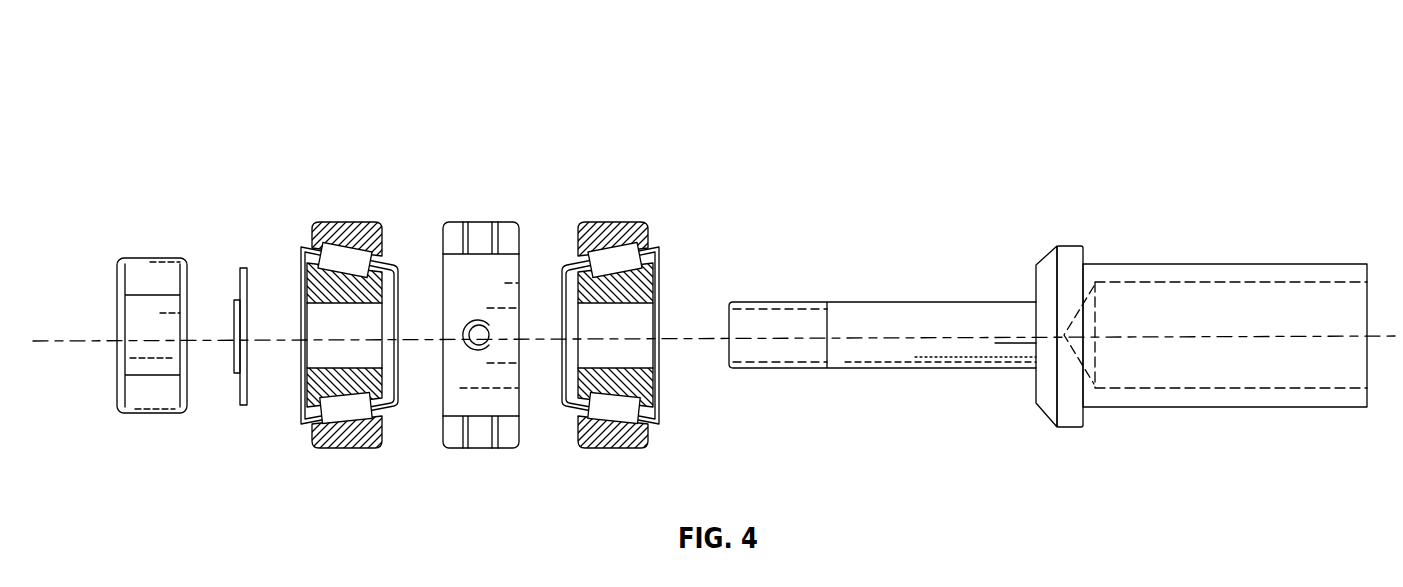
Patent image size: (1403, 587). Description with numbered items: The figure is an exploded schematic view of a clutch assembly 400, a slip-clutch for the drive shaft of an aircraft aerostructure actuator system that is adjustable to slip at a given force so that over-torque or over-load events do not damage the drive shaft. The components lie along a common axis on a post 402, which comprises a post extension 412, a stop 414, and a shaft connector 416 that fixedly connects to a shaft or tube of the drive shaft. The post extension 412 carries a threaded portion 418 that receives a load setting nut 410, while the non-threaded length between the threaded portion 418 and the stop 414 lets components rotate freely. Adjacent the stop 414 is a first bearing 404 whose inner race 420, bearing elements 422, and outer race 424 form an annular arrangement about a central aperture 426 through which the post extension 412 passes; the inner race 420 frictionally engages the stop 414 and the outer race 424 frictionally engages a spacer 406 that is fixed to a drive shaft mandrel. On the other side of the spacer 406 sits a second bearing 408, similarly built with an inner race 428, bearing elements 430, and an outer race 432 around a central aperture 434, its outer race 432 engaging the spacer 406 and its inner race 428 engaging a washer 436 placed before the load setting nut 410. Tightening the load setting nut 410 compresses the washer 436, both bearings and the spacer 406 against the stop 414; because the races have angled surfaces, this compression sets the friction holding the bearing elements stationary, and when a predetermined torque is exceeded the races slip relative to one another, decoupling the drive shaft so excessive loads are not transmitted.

The clutch assembly 400 is at (213, 84).
The post 402 is at (1048, 338).
The first bearing 404 is at (465, 318).
The spacer 406 is at (489, 197).
The second bearing 408 is at (494, 303).
The load setting nut 410 is at (154, 226).
The post extension 412 is at (880, 355).
The stop 414 is at (1047, 420).
The shaft connector 416 is at (1250, 407).
The threaded portion 418 is at (780, 358).
The inner race 420 is at (621, 372).
The bearing elements 422 is at (628, 258).
The outer race 424 is at (601, 235).
The central aperture 426 is at (602, 341).
The inner race 428 is at (378, 290).
The bearing elements 430 is at (345, 256).
The outer race 432 is at (358, 224).
The central aperture 434 is at (356, 341).
The washer 436 is at (241, 252).